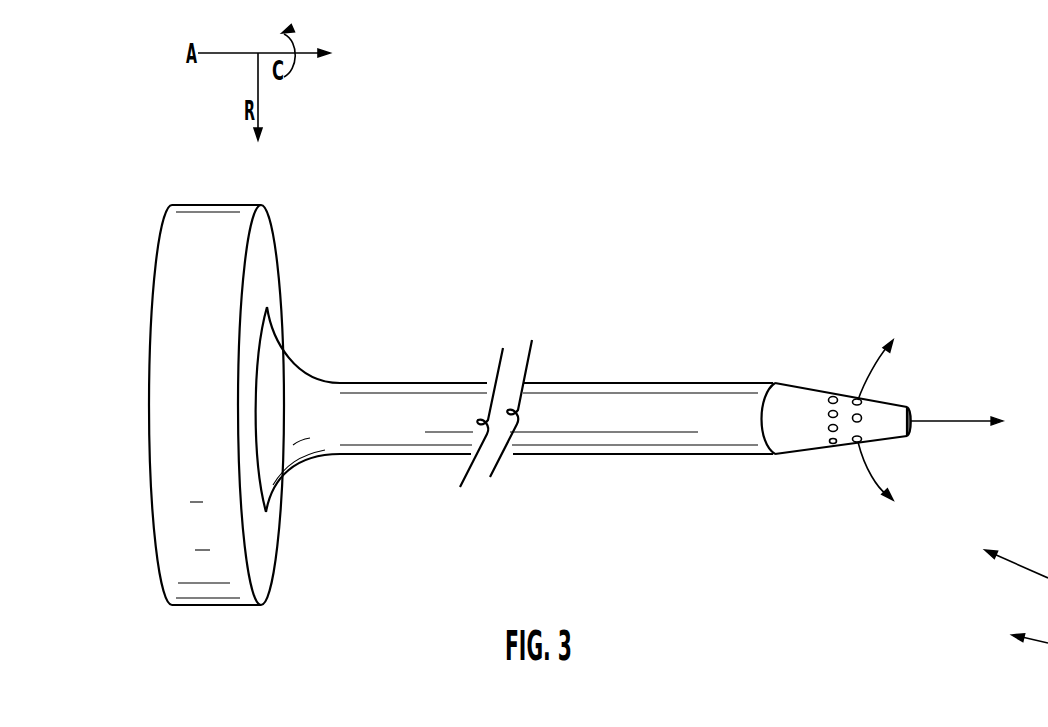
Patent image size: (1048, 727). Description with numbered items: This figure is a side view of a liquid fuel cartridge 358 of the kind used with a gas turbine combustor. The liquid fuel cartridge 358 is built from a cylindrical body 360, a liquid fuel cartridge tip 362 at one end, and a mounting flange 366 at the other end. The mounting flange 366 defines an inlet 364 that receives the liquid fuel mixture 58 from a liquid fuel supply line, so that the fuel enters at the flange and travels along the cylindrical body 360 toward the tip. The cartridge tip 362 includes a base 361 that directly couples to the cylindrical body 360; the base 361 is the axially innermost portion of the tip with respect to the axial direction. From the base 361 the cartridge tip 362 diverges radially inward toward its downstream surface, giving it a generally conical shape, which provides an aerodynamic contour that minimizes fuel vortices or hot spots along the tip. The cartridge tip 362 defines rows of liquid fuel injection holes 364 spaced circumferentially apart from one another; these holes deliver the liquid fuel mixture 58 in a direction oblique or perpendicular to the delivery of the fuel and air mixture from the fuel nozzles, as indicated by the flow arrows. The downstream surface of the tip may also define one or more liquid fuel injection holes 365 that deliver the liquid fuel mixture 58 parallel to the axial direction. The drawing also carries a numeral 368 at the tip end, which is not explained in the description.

The liquid fuel cartridge 358 is at (798, 282).
The cylindrical body 360 is at (676, 382).
The base 361 is at (770, 456).
The liquid fuel cartridge tip 362 is at (810, 383).
The liquid fuel injection holes 364 is at (856, 423).
The liquid fuel injection holes 365 is at (908, 431).
The mounting flange 366 is at (260, 230).
The tip outlet 368 is at (912, 410).
The liquid fuel mixture 58 is at (858, 400).